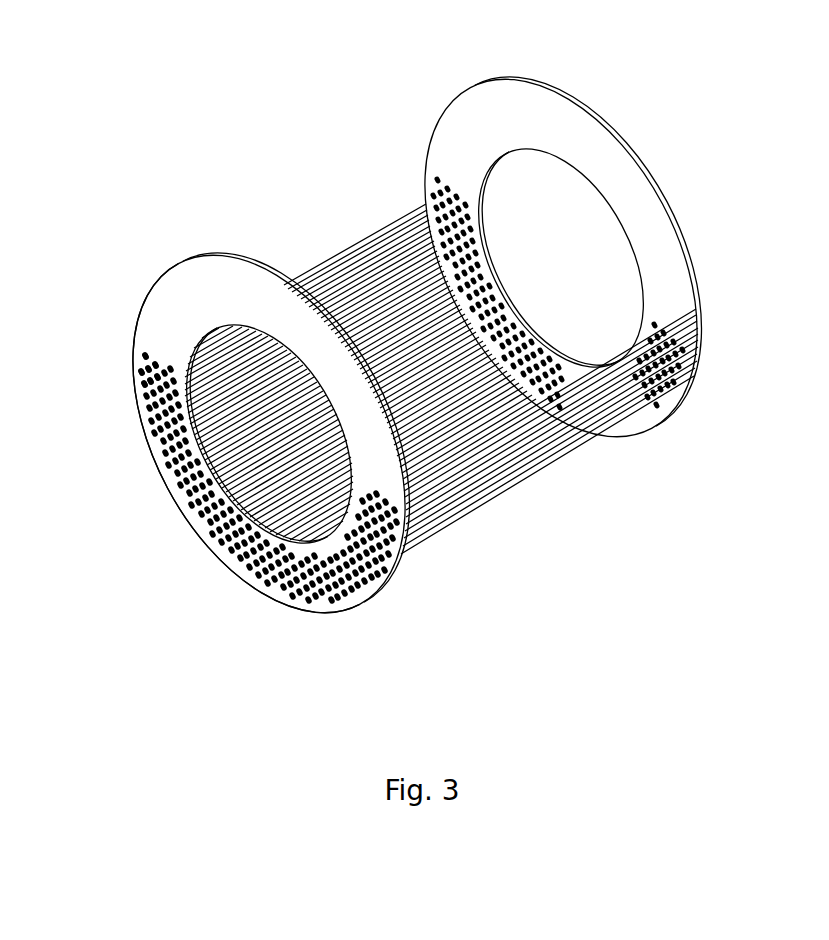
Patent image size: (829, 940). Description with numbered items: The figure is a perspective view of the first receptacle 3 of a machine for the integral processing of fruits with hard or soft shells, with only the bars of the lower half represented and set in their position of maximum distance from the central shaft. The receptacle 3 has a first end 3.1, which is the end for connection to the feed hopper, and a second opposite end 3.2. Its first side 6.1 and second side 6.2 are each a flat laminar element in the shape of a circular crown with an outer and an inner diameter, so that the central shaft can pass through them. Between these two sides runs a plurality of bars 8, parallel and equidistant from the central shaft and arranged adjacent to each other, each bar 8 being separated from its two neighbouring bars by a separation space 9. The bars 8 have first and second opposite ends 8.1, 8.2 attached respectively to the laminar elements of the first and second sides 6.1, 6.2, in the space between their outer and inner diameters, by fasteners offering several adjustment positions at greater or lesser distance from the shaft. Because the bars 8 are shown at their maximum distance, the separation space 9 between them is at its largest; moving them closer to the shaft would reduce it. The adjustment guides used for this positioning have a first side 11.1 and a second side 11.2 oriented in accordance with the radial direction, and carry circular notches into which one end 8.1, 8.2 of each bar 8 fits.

The first receptacle 3 is at (207, 73).
The first end 3.1 is at (358, 601).
The second end 3.2 is at (658, 432).
The first side 6.1 is at (168, 288).
The second side 6.2 is at (462, 106).
The bars 8 is at (582, 434).
The first end of the bar 8.1 is at (320, 588).
The second end of the bar 8.2 is at (474, 197).
The separation space 9 is at (398, 247).
The first side of the adjustment guide 11.1 is at (150, 356).
The second side of the adjustment guide 11.2 is at (150, 375).